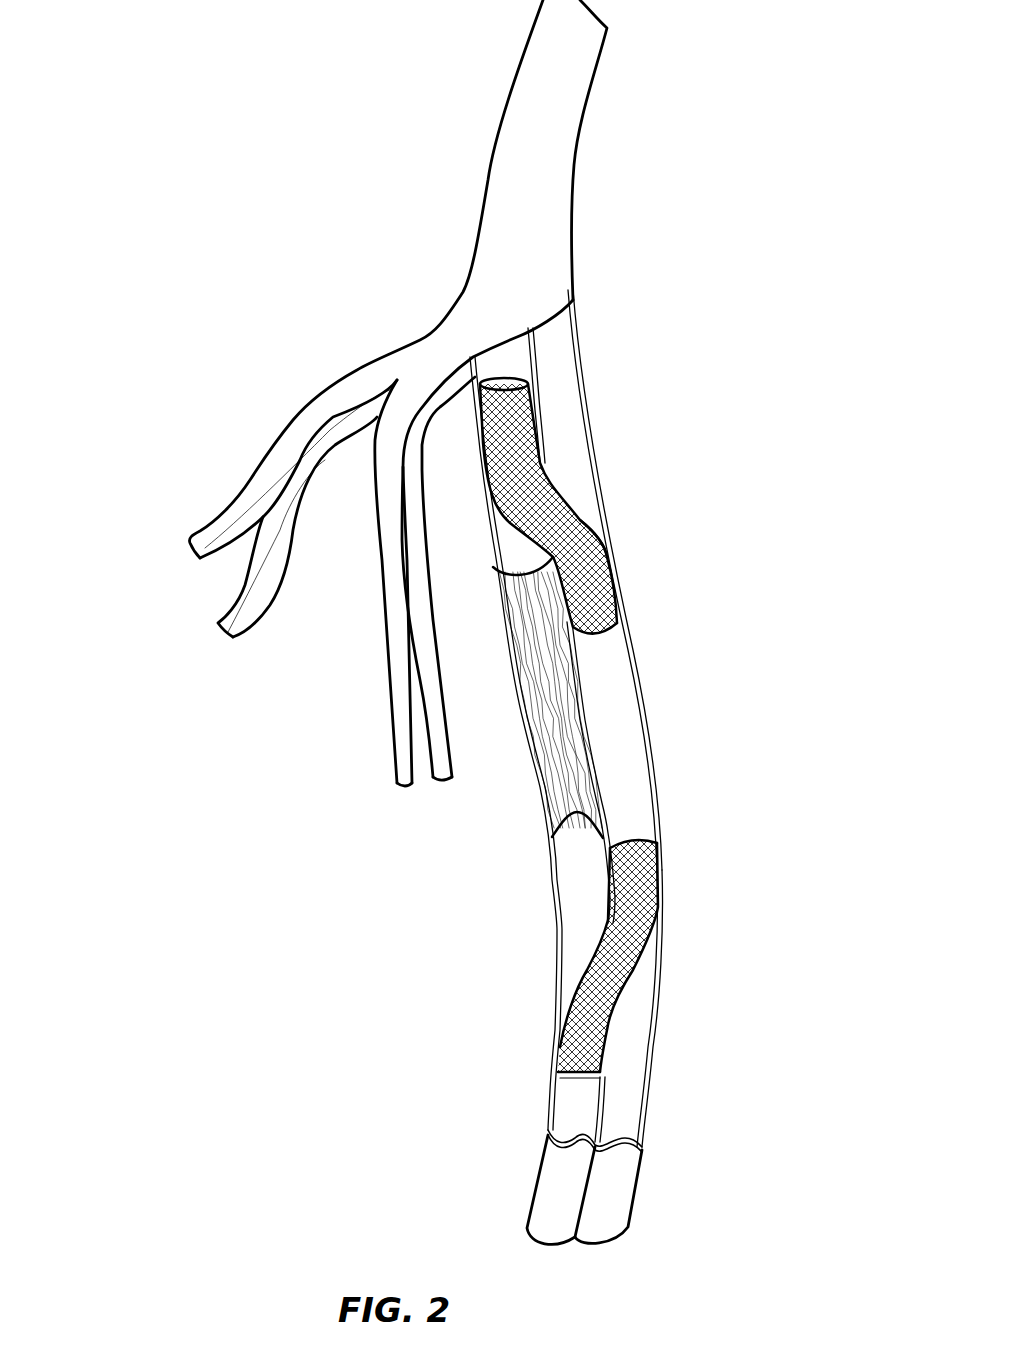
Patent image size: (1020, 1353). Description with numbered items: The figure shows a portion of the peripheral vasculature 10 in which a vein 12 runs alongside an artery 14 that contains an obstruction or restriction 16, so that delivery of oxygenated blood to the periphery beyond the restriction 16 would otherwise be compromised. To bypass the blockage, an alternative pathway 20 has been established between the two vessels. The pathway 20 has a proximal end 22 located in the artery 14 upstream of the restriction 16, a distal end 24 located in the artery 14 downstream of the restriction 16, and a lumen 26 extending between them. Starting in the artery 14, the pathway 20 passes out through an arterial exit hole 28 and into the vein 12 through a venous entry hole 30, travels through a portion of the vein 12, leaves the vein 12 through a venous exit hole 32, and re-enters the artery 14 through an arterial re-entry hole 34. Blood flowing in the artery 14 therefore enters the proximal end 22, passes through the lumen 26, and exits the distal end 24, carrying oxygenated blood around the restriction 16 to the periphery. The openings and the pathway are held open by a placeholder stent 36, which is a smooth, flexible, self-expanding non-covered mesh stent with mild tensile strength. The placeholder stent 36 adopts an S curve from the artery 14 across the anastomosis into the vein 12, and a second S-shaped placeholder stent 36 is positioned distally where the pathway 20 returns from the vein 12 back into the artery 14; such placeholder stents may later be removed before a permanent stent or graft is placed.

The peripheral vasculature 10 is at (140, 185).
The vein 12 is at (563, 410).
The artery 14 is at (500, 205).
The restriction 16 is at (542, 717).
The alternative pathway 20 is at (607, 630).
The proximal end 22 is at (582, 506).
The distal end 24 is at (640, 997).
The lumen 26 is at (625, 717).
The arterial exit hole 28 is at (510, 495).
The venous entry hole 30 is at (580, 530).
The venous exit hole 32 is at (603, 959).
The arterial re-entry hole 34 is at (573, 1027).
The placeholder stent 36 is at (597, 590).